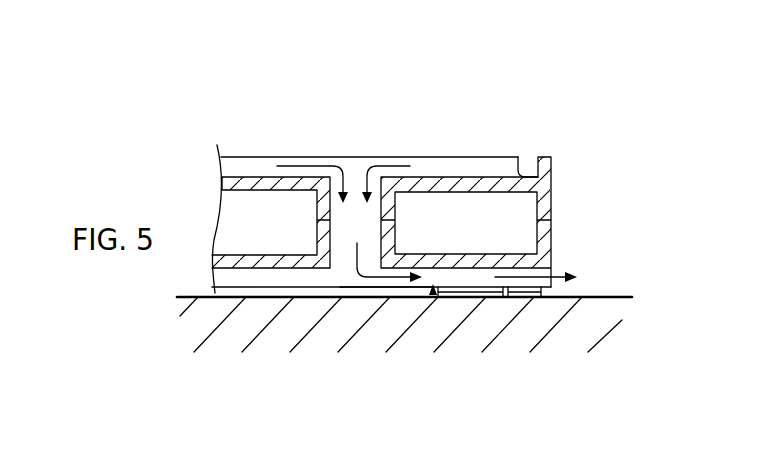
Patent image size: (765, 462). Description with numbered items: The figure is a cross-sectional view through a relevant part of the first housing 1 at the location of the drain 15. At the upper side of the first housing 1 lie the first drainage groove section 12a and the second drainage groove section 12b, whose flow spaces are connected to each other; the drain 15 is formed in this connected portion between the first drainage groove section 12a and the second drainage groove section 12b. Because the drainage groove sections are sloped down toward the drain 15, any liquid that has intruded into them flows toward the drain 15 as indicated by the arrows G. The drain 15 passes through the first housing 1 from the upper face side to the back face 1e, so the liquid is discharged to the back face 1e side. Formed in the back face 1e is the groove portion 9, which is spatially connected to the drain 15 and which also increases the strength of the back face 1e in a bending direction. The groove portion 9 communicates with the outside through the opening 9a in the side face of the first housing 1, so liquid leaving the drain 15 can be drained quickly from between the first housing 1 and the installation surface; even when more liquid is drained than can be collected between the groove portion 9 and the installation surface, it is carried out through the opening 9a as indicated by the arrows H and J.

The first housing 1 is at (552, 192).
The back face 1e is at (433, 297).
The groove portion 9 is at (285, 276).
The opening 9a is at (565, 284).
The first drainage groove section 12a is at (243, 166).
The second drainage groove section 12b is at (529, 166).
The drain 15 is at (356, 224).
The arrows G is at (305, 166).
The arrow H is at (383, 288).
The arrow J is at (520, 297).